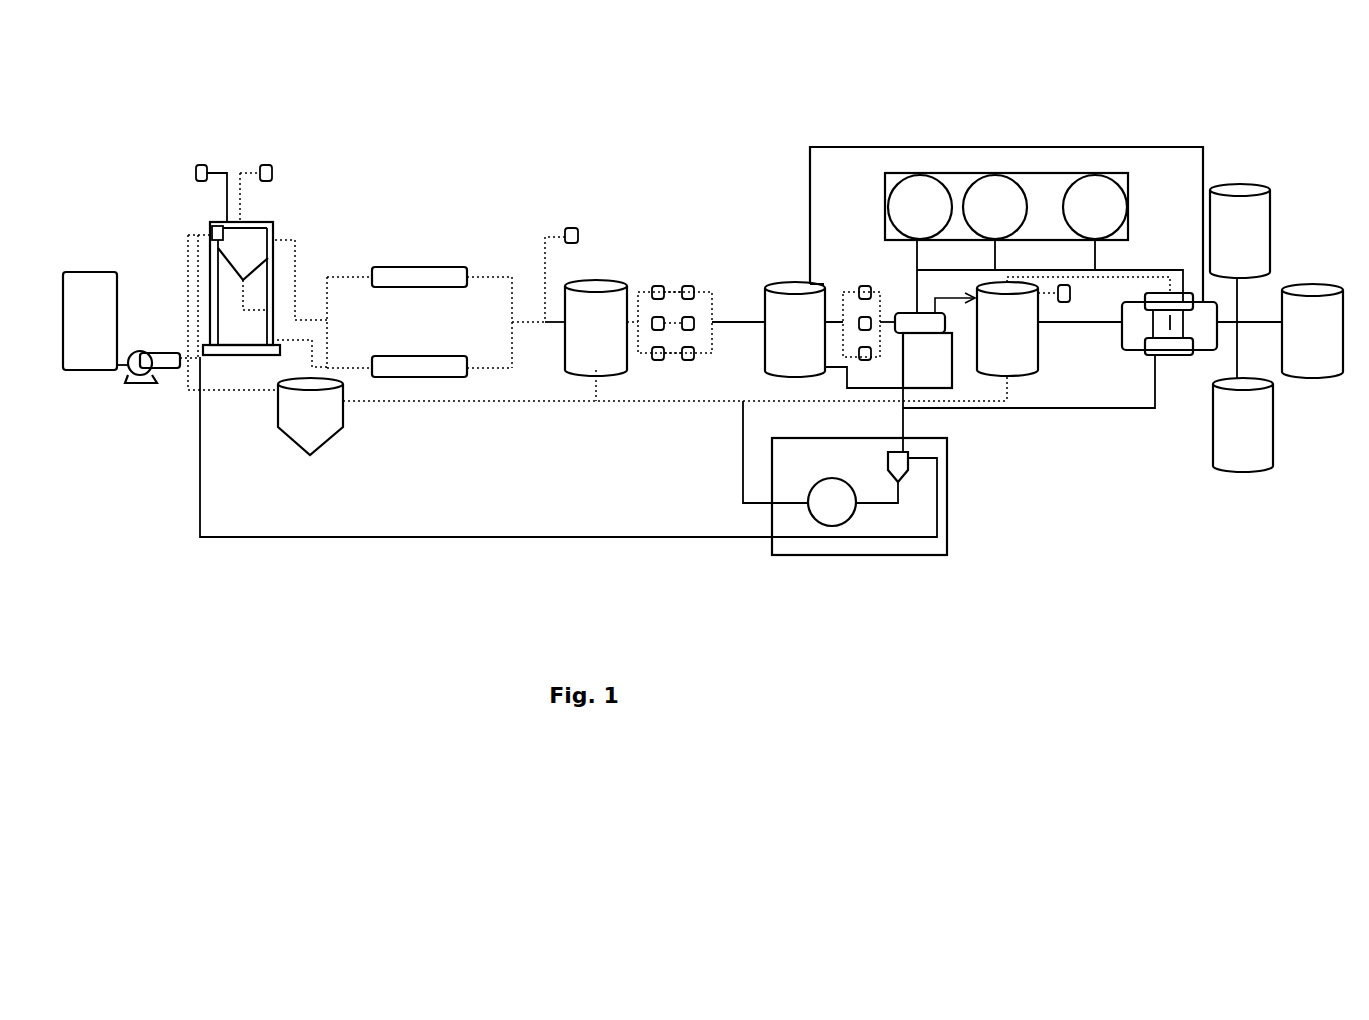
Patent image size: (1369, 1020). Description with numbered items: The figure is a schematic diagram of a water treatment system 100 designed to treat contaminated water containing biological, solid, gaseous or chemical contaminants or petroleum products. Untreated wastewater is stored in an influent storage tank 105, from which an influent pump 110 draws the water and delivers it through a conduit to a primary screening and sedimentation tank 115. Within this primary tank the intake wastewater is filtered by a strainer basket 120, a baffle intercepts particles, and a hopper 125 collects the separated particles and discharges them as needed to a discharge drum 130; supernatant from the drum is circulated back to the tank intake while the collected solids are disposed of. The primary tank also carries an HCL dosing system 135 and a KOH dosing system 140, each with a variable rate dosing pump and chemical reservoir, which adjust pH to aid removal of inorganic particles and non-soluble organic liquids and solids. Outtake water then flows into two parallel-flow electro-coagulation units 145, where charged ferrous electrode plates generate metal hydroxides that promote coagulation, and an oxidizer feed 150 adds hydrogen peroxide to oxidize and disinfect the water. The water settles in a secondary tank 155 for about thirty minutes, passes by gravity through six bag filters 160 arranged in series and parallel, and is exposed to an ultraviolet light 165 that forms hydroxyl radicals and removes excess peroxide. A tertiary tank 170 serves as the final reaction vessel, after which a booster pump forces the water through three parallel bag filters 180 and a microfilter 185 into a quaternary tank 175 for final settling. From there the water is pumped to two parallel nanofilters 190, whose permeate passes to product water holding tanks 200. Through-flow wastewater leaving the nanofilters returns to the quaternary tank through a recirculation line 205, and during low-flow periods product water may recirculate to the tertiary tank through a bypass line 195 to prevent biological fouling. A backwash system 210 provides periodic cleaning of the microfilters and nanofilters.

The water treatment system 100 is at (990, 117).
The influent storage tank 105 is at (96, 267).
The influent pump 110 is at (142, 407).
The primary screening and sedimentation tank 115 is at (247, 360).
The strainer basket 120 is at (210, 228).
The hopper 125 is at (245, 278).
The discharge drum 130 is at (337, 457).
The HCL dosing system 135 is at (203, 157).
The KOH dosing system 140 is at (287, 163).
The electro-coagulation units 145 is at (463, 353).
The oxidizer feed 150 is at (583, 224).
The secondary tank 155 is at (592, 388).
The bag filters 160 is at (693, 290).
The ultraviolet light 165 is at (746, 312).
The tertiary tank 170 is at (763, 373).
The quaternary tank 175 is at (1020, 380).
The bag filters 180 is at (867, 273).
The microfilter 185 is at (933, 347).
The nanofilters 190 is at (1182, 363).
The bypass line 195 is at (1190, 143).
The product water holding tanks 200 is at (1248, 372).
The recirculation line 205 is at (1132, 275).
The backwash system 210 is at (1067, 170).